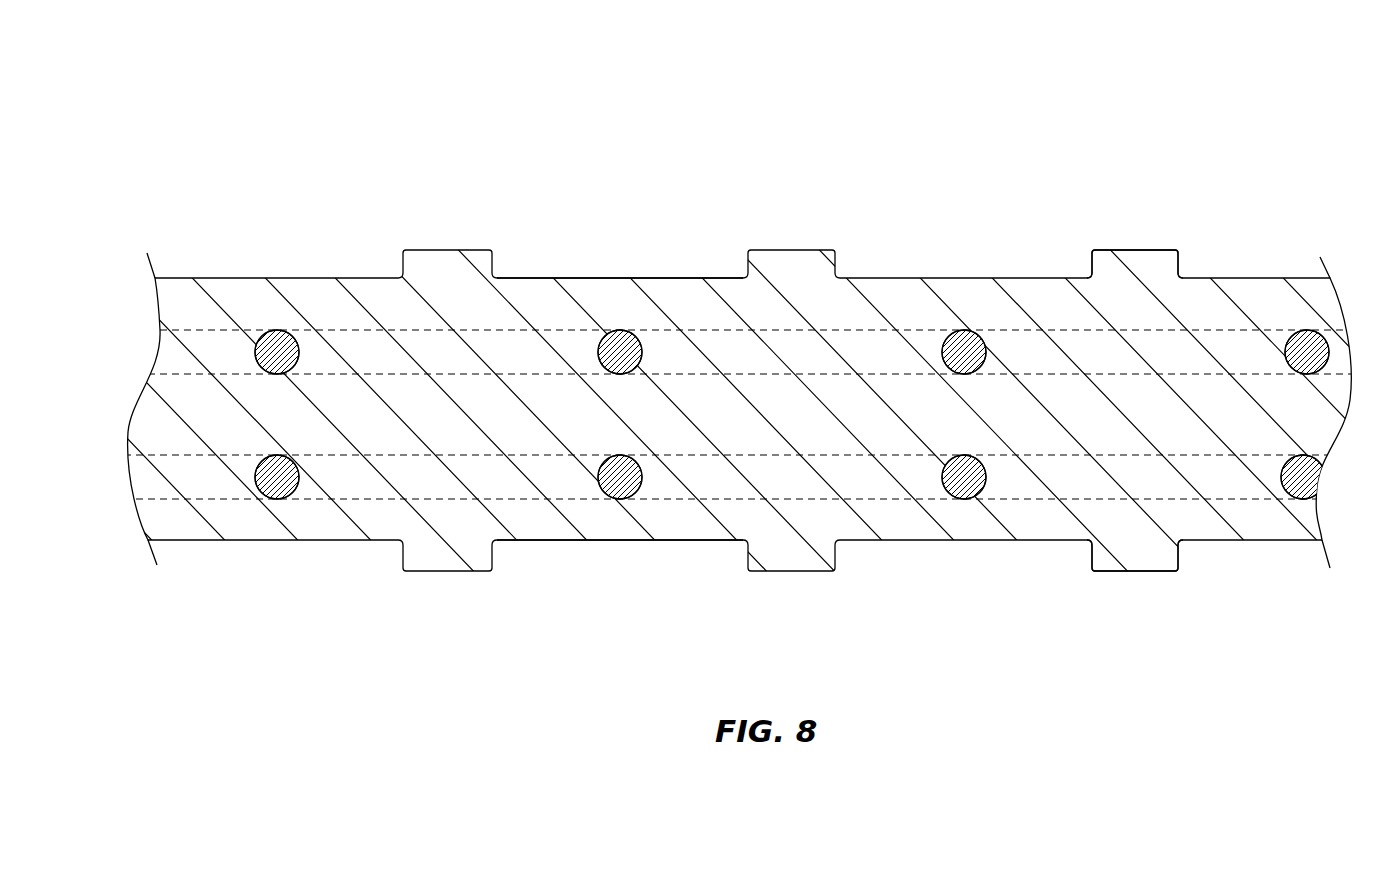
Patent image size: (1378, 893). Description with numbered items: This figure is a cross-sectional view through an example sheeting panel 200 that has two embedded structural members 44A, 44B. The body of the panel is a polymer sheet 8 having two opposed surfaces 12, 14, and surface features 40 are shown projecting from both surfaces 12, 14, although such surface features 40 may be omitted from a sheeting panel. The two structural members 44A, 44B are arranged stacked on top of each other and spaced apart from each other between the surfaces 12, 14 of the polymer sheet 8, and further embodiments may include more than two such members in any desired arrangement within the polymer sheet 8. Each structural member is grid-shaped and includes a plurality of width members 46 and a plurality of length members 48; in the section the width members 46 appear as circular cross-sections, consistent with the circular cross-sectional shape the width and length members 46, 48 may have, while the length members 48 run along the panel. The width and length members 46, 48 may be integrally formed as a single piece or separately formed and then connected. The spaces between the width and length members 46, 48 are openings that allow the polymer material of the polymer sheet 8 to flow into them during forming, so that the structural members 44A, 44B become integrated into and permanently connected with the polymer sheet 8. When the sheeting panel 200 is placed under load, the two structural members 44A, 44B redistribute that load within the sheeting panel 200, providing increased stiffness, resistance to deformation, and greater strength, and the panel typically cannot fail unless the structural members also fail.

The sheeting panel 200 is at (689, 364).
The polymer sheet 8 is at (689, 416).
The surface 12 is at (597, 278).
The surface 14 is at (568, 540).
The surface features 40 is at (1147, 252).
The structural member 44A is at (254, 324).
The structural member 44B is at (985, 508).
The width members 46 is at (622, 347).
The length members 48 is at (667, 347).